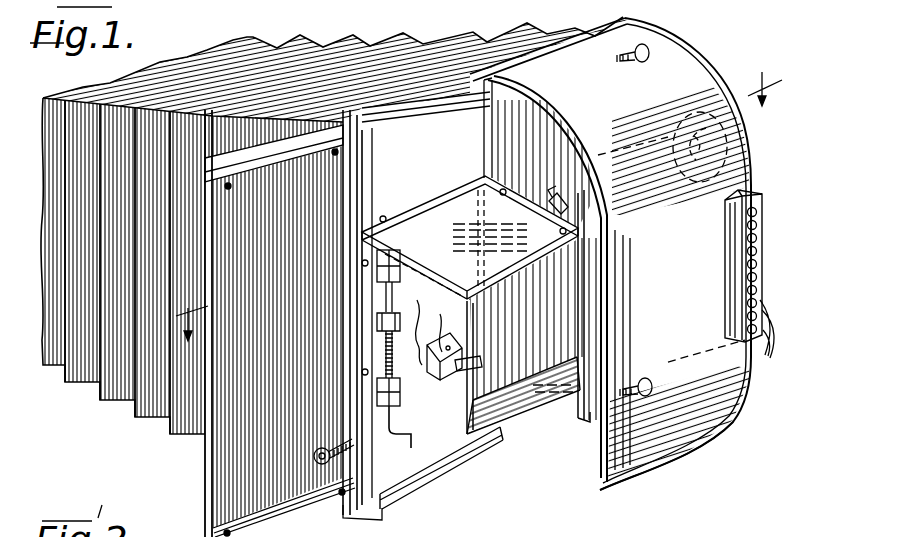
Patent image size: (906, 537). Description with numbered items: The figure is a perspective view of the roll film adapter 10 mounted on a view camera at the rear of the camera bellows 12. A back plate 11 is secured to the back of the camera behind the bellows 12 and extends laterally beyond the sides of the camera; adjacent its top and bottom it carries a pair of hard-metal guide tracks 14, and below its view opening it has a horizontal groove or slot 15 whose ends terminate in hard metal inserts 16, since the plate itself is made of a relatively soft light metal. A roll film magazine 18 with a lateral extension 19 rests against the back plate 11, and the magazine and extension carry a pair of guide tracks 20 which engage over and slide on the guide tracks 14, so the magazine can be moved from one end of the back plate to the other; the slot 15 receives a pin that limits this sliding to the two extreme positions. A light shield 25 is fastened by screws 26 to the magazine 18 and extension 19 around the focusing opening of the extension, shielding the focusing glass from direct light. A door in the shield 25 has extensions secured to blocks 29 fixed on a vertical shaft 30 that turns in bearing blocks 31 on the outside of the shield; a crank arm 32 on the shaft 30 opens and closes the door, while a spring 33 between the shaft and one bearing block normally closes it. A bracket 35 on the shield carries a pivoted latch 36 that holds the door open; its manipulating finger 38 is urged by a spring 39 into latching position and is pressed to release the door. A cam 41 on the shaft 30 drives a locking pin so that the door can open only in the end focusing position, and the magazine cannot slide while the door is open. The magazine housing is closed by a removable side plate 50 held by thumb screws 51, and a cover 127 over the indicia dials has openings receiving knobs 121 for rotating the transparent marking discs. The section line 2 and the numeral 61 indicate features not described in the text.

The section line of FIG. 2 is at (479, 197).
The roll film adapter 10 is at (700, 43).
The back plate 11 is at (215, 479).
The bellows 12 is at (410, 43).
The guide tracks 14 is at (292, 186).
The horizontal groove or slot 15 is at (340, 445).
The metal inserts 16 is at (315, 452).
The roll film magazine 18 is at (713, 452).
The lateral extension 19 is at (472, 485).
The guide tracks 20 is at (350, 112).
The light shield 25 is at (537, 416).
The screws 26 is at (385, 216).
The blocks 29 is at (377, 258).
The vertical shaft 30 is at (386, 292).
The bearing blocks 31 is at (377, 276).
The crank arm 32 is at (417, 444).
The spring 33 is at (384, 360).
The bracket 35 is at (458, 385).
The latch 36 is at (482, 366).
The manipulating finger 38 is at (420, 323).
The spring 39 is at (443, 323).
The cam 41 is at (377, 325).
The removable side plate 50 is at (740, 144).
The thumb screws 51 is at (650, 46).
The opening 61 is at (684, 114).
The knobs 121 is at (776, 334).
The cover 127 is at (765, 190).